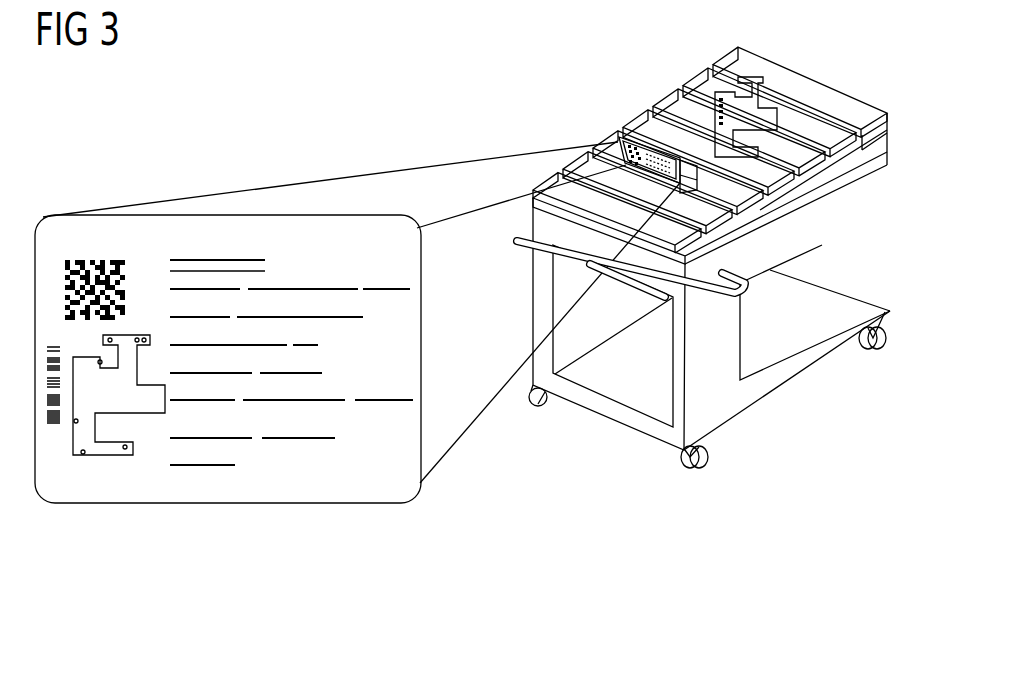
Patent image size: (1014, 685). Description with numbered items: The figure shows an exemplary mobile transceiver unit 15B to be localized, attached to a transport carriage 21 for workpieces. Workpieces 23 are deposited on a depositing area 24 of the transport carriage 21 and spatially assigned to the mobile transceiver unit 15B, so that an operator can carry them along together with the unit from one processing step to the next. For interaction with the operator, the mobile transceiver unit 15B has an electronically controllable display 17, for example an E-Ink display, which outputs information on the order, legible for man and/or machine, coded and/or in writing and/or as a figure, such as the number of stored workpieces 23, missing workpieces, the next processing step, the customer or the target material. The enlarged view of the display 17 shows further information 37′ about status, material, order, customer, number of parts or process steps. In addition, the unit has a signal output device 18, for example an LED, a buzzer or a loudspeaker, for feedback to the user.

The display 17 is at (110, 483).
The further information 37′ is at (342, 288).
The transport carriage 21 is at (808, 252).
The signal output device 18 is at (746, 272).
The mobile transceiver unit 15B is at (710, 155).
The depositing area 24 is at (827, 109).
The workpieces 23 is at (748, 112).